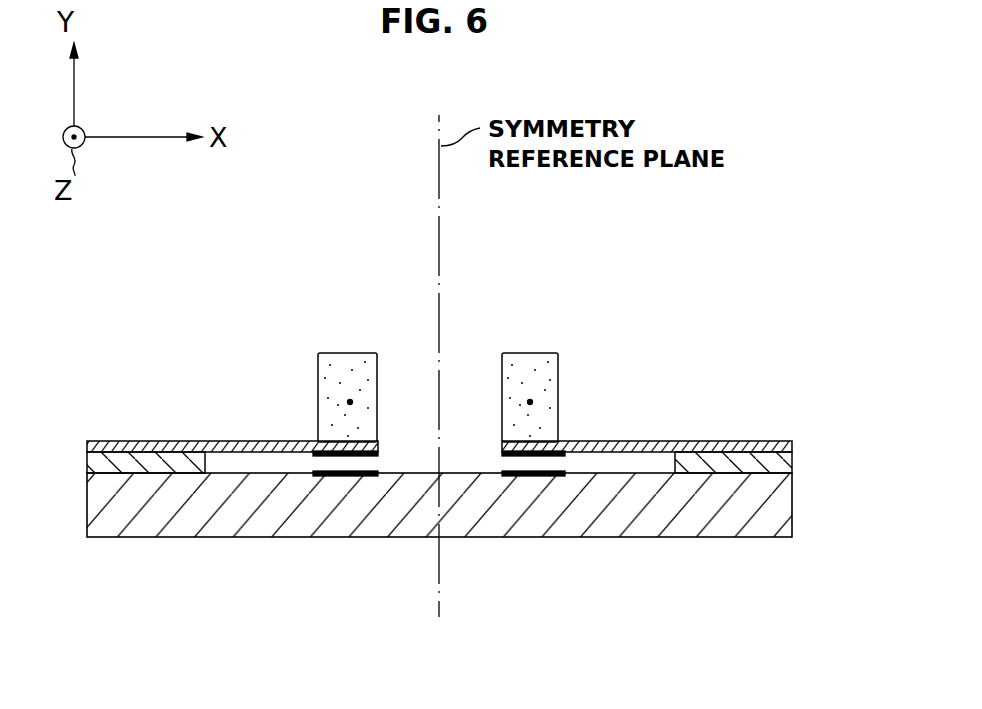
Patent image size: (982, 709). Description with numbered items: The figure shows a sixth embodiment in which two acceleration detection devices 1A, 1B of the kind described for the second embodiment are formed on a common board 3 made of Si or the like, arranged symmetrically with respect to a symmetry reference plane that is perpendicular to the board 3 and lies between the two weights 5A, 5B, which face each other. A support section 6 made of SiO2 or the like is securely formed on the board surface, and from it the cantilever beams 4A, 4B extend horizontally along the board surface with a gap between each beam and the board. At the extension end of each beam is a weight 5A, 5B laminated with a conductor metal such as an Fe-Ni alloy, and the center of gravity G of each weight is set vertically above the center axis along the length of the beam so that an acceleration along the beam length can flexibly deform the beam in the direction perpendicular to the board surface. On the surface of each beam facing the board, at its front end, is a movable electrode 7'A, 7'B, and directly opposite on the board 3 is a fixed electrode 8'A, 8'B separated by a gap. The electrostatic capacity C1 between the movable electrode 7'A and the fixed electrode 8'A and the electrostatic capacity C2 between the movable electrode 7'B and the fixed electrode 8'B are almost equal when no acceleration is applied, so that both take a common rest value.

The acceleration detection device 1A is at (226, 332).
The acceleration detection device 1B is at (665, 329).
The board 3 is at (233, 530).
The beam 4A is at (197, 441).
The beam 4B is at (630, 443).
The weight 5A is at (337, 363).
The weight 5B is at (517, 362).
The support section 6 is at (87, 462).
The movable electrode 7'A is at (375, 414).
The movable electrode 7'B is at (515, 431).
The fixed electrode 8'A is at (345, 536).
The fixed electrode 8'B is at (542, 533).
The center of gravity G is at (350, 402).
The electrostatic capacity C1 is at (363, 466).
The electrostatic capacity C2 is at (560, 462).